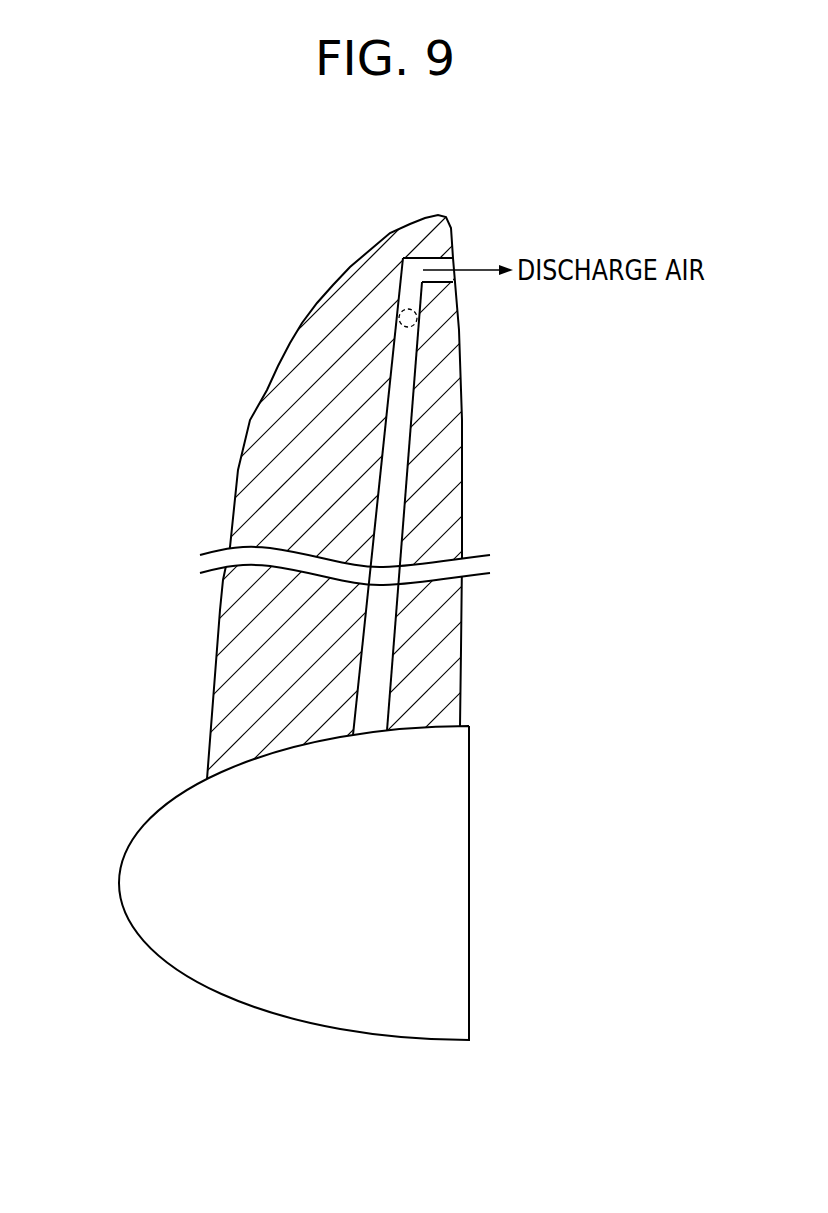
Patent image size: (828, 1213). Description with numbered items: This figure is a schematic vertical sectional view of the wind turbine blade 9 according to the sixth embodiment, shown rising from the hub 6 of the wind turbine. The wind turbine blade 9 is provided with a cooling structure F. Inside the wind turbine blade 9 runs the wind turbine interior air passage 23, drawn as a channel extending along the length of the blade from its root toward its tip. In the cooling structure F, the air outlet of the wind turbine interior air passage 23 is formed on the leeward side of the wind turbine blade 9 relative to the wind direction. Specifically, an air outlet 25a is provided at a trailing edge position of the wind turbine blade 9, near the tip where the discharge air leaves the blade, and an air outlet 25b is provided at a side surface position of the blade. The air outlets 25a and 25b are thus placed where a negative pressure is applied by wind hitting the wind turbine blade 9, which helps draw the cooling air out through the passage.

The cooling structure F is at (133, 298).
The hub 6 is at (140, 828).
The wind turbine blade 9 is at (238, 477).
The wind turbine interior air passage 23 is at (402, 453).
The air outlet 25a is at (447, 262).
The air outlet 25b is at (408, 318).